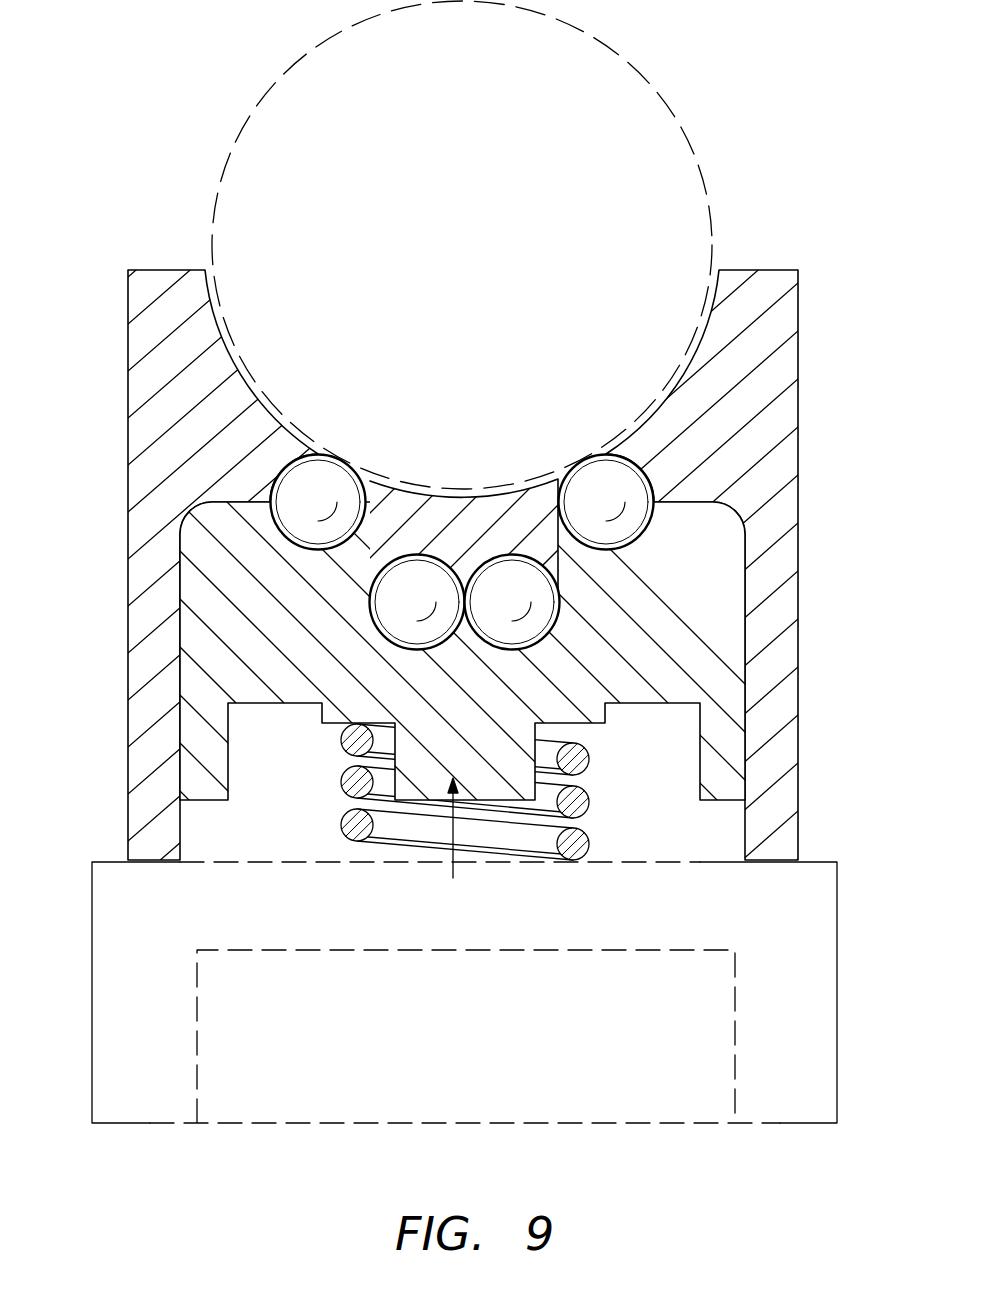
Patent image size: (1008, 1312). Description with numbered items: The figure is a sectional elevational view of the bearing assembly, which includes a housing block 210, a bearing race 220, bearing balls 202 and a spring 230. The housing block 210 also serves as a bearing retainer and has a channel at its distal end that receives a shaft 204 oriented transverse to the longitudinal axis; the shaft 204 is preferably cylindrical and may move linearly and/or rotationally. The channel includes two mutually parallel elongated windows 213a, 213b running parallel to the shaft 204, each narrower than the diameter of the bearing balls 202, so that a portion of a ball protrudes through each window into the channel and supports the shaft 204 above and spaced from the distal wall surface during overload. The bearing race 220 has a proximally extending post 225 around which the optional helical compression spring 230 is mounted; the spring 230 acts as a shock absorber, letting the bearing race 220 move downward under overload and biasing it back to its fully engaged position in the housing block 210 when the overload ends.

The bearing balls 202 is at (417, 572).
The shaft 204 is at (478, 288).
The housing block 210 is at (128, 399).
The elongated window 213a is at (318, 452).
The elongated window 213b is at (607, 452).
The bearing race 220 is at (733, 646).
The post 225 is at (456, 846).
The spring 230 is at (588, 802).